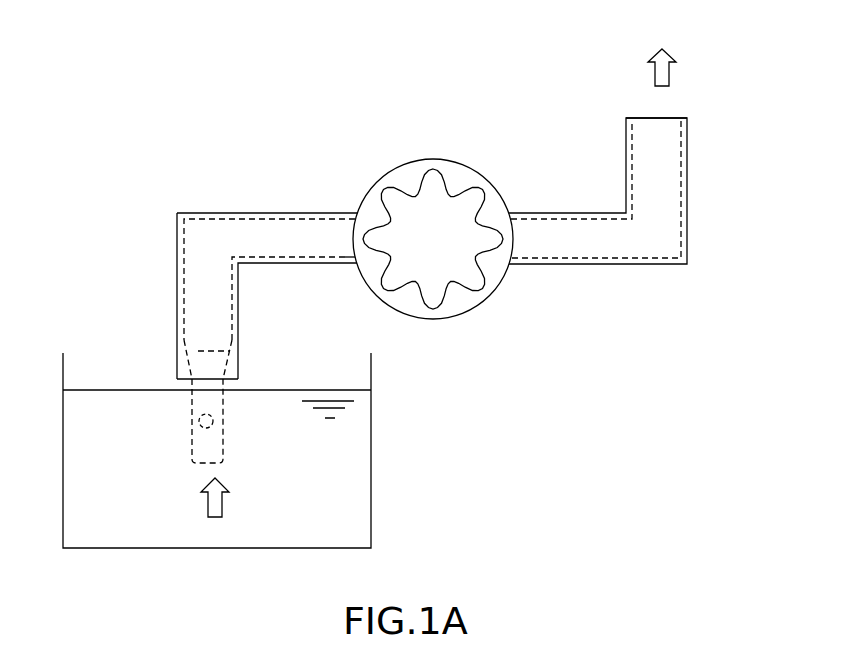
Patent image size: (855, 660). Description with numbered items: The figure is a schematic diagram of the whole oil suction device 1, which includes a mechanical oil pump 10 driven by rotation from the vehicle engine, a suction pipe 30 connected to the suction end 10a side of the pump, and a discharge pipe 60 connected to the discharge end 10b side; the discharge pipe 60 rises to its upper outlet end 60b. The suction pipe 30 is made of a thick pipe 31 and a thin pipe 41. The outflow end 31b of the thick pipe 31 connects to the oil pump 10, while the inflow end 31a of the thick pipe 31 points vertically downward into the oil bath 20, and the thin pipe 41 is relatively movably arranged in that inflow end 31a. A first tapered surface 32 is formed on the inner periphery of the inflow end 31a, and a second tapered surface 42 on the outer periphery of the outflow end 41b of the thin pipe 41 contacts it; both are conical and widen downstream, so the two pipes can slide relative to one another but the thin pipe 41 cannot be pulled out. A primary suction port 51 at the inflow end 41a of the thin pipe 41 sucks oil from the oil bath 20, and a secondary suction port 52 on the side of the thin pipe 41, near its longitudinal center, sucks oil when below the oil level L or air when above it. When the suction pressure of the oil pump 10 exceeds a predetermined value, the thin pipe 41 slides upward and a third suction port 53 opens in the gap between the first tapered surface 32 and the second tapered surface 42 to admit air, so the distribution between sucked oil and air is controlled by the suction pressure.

The oil suction device 1 is at (583, 89).
The mechanical oil pump 10 is at (466, 165).
The suction end 10a is at (354, 242).
The discharge end 10b is at (511, 236).
The oil bath 20 is at (374, 445).
The suction pipe 30 is at (174, 249).
The thick pipe 31 is at (233, 212).
The inflow end of thick pipe 31a is at (183, 387).
The outflow end of thick pipe 31b is at (347, 246).
The first tapered surface 32 is at (232, 337).
The thin pipe 41 is at (189, 417).
The inflow end of thin pipe 41a is at (201, 466).
The outflow end of thin pipe 41b is at (198, 349).
The second tapered surface 42 is at (224, 374).
The primary suction port 51 is at (219, 466).
The secondary suction port 52 is at (214, 421).
The third suction port 53 is at (228, 344).
The discharge pipe 60 is at (590, 266).
The discharge end 60b is at (675, 115).
The oil level L is at (347, 390).